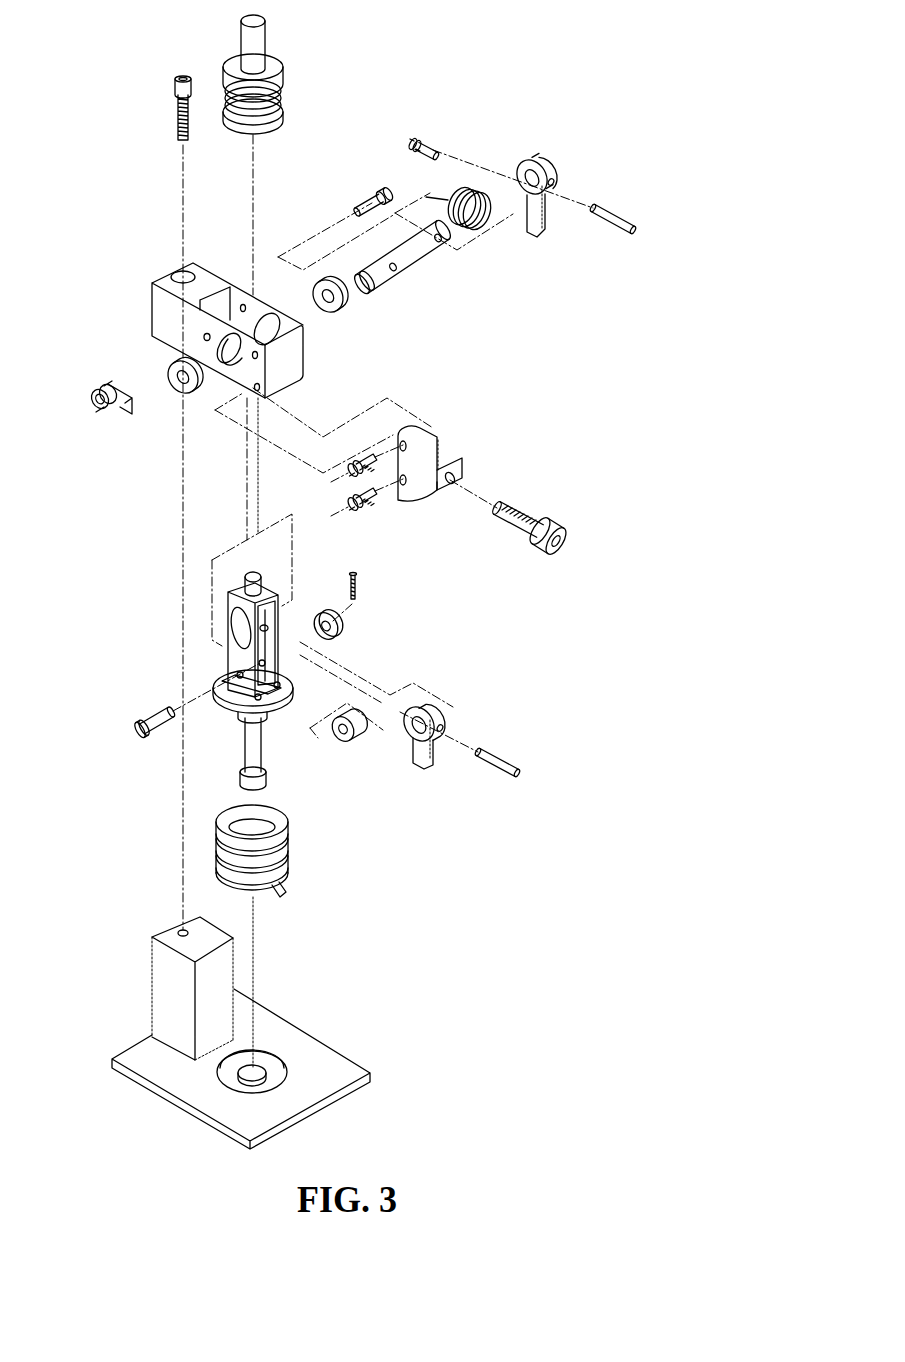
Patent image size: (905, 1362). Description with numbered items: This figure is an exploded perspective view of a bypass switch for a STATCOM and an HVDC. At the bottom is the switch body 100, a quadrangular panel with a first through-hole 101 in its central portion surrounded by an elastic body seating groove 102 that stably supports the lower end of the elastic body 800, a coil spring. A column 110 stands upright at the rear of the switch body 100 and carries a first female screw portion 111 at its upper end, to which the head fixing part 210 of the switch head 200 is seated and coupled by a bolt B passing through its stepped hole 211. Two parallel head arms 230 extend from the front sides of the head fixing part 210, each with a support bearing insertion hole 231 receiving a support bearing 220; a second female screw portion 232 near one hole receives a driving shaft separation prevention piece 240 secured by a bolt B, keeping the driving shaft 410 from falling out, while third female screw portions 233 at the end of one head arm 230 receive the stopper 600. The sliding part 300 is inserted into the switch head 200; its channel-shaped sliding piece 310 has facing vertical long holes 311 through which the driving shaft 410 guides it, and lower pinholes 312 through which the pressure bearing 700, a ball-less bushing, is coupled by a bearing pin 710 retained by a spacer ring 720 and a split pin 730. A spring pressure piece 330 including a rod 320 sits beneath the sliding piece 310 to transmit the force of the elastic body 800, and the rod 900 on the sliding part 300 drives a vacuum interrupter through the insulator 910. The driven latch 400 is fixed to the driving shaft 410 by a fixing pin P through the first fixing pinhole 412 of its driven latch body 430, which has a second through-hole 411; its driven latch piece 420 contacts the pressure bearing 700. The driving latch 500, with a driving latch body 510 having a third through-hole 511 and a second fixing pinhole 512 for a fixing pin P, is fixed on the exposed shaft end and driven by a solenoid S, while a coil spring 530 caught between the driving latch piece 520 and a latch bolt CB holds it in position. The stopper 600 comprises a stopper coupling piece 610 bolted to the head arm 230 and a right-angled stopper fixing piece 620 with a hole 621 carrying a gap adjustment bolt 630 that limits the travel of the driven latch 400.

The switch body 100 is at (281, 1069).
The first through-hole 101 is at (296, 1107).
The elastic body seating groove 102 is at (298, 1088).
The column 110 is at (148, 988).
The first female screw portion 111 is at (138, 944).
The switch head 200 is at (196, 326).
The head fixing part 210 is at (193, 330).
The stepped hole 211 is at (150, 257).
The support bearing 220 is at (263, 368).
The head arm 230 is at (299, 353).
The support bearing insertion hole 231 is at (273, 365).
The second female screw portion 232 is at (156, 342).
The third female screw portion 233 is at (295, 403).
The driving shaft separation prevention piece 240 is at (94, 421).
The sliding part 300 is at (236, 681).
The sliding piece 310 is at (208, 640).
The vertical long hole 311 is at (192, 611).
The pinhole 312 is at (188, 662).
The rod 320 is at (294, 761).
The spring pressure piece 330 is at (252, 710).
The driven latch 400 is at (466, 718).
The driving shaft 410 is at (408, 263).
The second through-hole 411 is at (439, 693).
The first fixing pinhole 412 is at (473, 731).
The driven latch piece 420 is at (451, 760).
The driven latch body 430 is at (459, 699).
The driving latch 500 is at (533, 210).
The driving latch body 510 is at (545, 151).
The third through-hole 511 is at (496, 161).
The second fixing pinhole 512 is at (593, 184).
The driving latch piece 520 is at (574, 225).
The coil spring 530 is at (482, 230).
The stopper 600 is at (508, 469).
The stopper coupling piece 610 is at (410, 494).
The stopper fixing piece 620 is at (487, 498).
The bolt hole 621 is at (490, 466).
The gap adjustment bolt 630 is at (563, 514).
The pressure bearing 700 is at (366, 750).
The bearing pin 710 is at (130, 709).
The spacer ring 720 is at (357, 630).
The split pin 730 is at (385, 586).
The elastic body 800 is at (288, 857).
The rod 900 is at (302, 42).
The insulator 910 is at (308, 94).
The bolt B is at (202, 314).
The solenoid S is at (426, 120).
The latch bolt CB is at (366, 176).
The fixing pin P is at (569, 475).